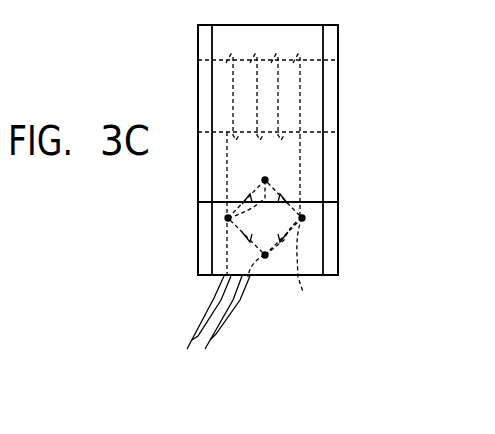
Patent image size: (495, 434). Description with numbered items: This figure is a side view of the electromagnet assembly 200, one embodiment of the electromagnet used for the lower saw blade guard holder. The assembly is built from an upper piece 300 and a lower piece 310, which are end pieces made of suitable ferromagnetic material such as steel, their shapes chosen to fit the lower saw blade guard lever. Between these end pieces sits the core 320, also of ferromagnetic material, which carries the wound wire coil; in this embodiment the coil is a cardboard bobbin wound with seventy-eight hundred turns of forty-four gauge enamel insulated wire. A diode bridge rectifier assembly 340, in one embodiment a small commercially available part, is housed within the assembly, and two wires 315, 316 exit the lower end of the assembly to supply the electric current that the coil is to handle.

The electromagnet assembly 200 is at (386, 135).
The upper piece 300 is at (197, 225).
The lower piece 310 is at (338, 242).
The wire 315 is at (204, 316).
The wire 316 is at (218, 332).
The core 320 is at (282, 60).
The diode bridge rectifier assembly 340 is at (281, 225).